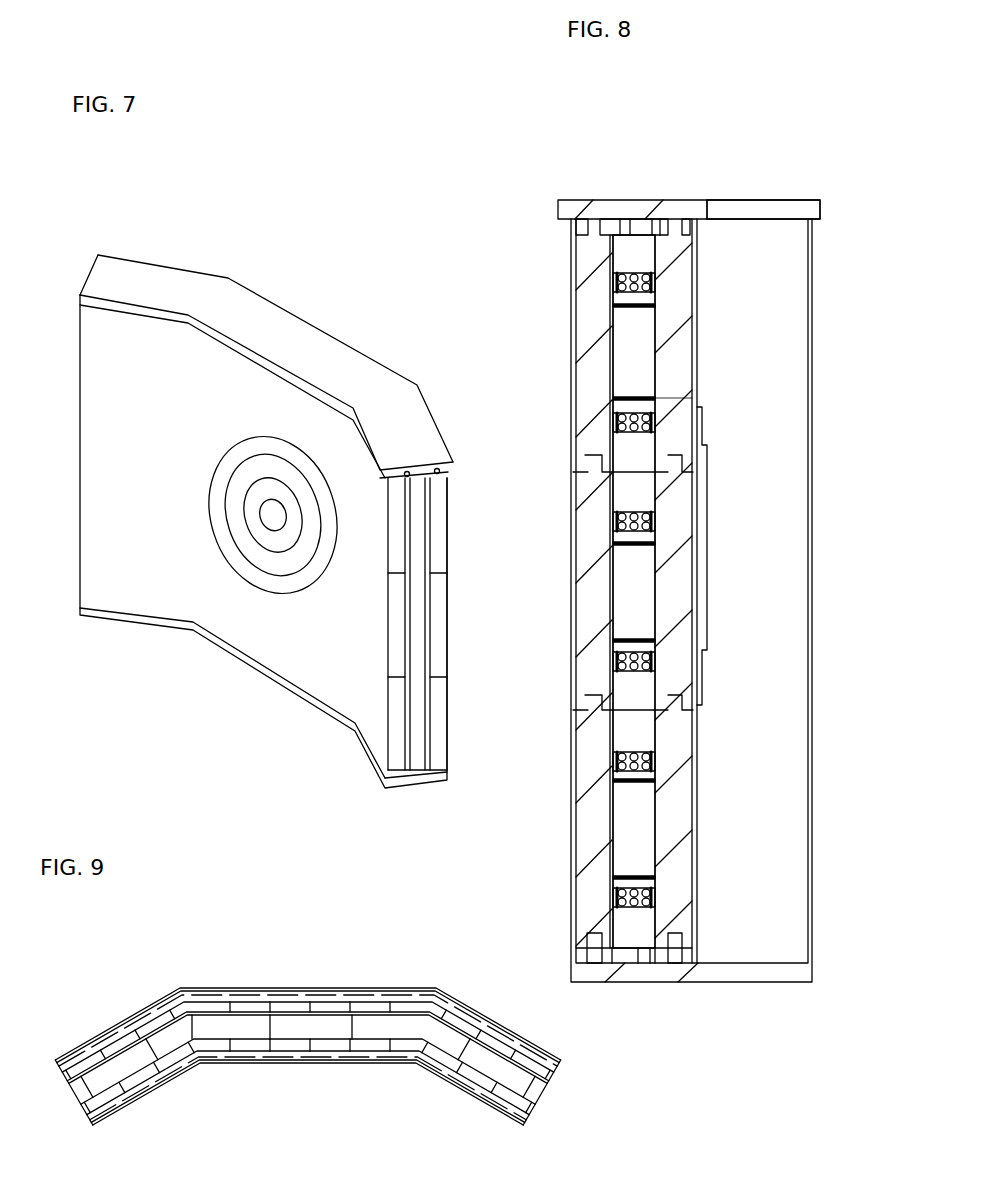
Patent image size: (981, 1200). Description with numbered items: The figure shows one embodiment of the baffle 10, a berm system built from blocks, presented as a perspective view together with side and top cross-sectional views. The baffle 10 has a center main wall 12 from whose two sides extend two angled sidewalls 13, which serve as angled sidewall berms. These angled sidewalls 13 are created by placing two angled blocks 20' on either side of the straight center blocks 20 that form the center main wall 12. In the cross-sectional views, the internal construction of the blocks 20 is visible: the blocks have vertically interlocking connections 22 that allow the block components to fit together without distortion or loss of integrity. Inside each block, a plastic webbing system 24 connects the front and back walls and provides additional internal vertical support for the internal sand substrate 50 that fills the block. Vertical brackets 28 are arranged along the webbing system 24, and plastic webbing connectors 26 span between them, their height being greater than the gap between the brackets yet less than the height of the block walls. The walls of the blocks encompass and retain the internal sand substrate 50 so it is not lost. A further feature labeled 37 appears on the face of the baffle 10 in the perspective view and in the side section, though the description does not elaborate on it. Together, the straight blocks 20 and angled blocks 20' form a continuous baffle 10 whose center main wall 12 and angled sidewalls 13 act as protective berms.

In FIG. 7, the baffle 10 is at (312, 200).
In FIG. 8, the baffle 10 is at (672, 150).
In FIG. 9, the baffle 10 is at (235, 935).
In FIG. 7, the center main wall 12 is at (328, 305).
In FIG. 9, the center main wall 12 is at (331, 1068).
In FIG. 7, the angled sidewall 13 is at (137, 245).
In FIG. 8, the angled sidewall 13 is at (770, 185).
In FIG. 9, the angled sidewall 13 is at (154, 1096).
In FIG. 9, the block 20 is at (307, 998).
In FIG. 9, the angled block 20' is at (347, 1035).
In FIG. 8, the vertically interlocking connection 22 is at (700, 430).
In FIG. 8, the plastic webbing system 24 is at (650, 407).
In FIG. 8, the plastic webbing connector 26 is at (648, 306).
In FIG. 8, the vertical bracket 28 is at (652, 283).
In FIG. 7, the mounting boss 37 is at (232, 538).
In FIG. 8, the mounting boss 37 is at (714, 698).
In FIG. 8, the internal sand substrate 50 is at (645, 828).
In FIG. 9, the internal sand substrate 50 is at (400, 1020).